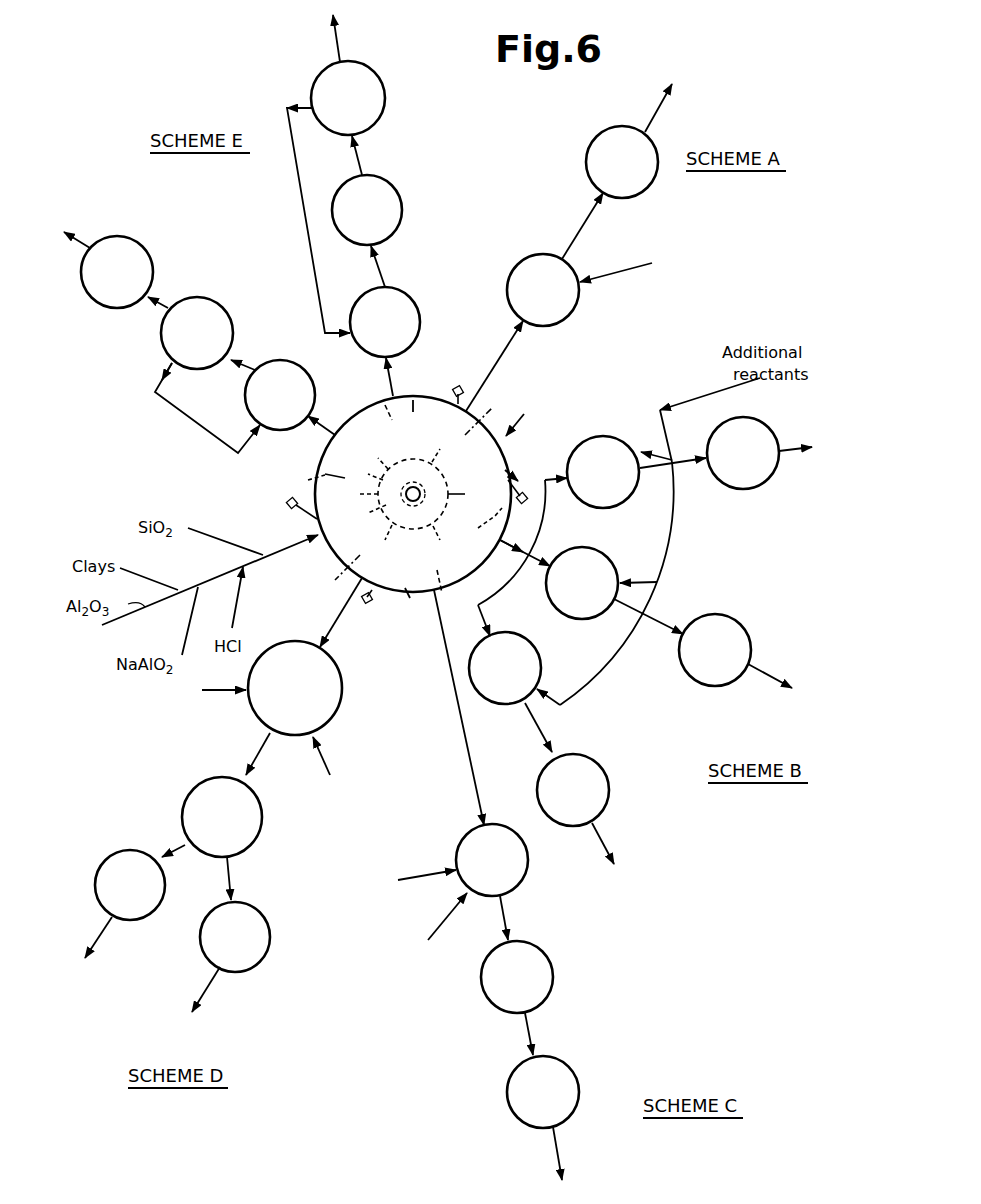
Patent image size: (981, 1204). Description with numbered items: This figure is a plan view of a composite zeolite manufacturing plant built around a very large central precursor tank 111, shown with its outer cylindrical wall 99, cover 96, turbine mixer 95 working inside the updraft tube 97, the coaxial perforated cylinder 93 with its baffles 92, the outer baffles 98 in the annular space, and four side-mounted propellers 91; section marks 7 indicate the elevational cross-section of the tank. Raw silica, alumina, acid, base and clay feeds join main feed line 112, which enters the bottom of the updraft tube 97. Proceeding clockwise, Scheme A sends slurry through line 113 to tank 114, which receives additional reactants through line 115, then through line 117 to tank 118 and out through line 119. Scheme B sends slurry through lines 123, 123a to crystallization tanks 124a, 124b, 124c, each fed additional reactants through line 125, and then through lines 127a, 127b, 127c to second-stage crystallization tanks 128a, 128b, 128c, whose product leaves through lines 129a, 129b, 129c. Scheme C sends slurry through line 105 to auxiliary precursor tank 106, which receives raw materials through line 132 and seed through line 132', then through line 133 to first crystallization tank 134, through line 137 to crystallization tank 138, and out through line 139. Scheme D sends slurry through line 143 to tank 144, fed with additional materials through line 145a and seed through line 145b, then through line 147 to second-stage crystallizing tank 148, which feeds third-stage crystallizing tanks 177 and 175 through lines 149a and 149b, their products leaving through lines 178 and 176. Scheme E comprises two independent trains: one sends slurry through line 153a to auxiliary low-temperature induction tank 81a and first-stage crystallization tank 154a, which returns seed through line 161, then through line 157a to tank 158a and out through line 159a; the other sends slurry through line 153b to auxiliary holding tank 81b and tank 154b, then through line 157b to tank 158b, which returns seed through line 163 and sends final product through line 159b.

The section line 7- 7 is at (492, 386).
The auxiliary low-temperature induction tank 81a is at (295, 365).
The auxiliary holding tank 81b is at (412, 302).
The side-mounted propellers 91 is at (288, 503).
The baffles 92 is at (411, 485).
The perforated cylinder 93 is at (364, 472).
The turbine mixer 95 is at (419, 489).
The cover 96 is at (430, 450).
The updraft tube 97 is at (365, 513).
The baffles 98 is at (478, 525).
The outer cylindrical wall 99 is at (314, 477).
The line 105 is at (468, 797).
The auxiliary precursor tank 106 is at (524, 876).
The precursor tank 111 is at (524, 414).
The feed line 112 is at (298, 545).
The line 113 is at (500, 348).
The tank 114 is at (570, 311).
The line 115 is at (625, 272).
The line 117 is at (582, 218).
The tank 118 is at (587, 152).
The line 119 is at (646, 111).
The line 123 is at (505, 548).
The line 123a is at (492, 602).
The crystallization tank 124a is at (590, 437).
The crystallization tank 124b is at (600, 548).
The crystallization tank 124c is at (540, 649).
The line 125 is at (692, 399).
The line 127a is at (688, 466).
The line 127b is at (664, 614).
The line 127c is at (537, 725).
The second-stage crystallization tank 128a is at (746, 489).
The second-stage crystallization tank 128b is at (720, 616).
The second-stage crystallization tank 128c is at (605, 782).
The line 129a is at (790, 447).
The line 129b is at (762, 676).
The line 129c is at (605, 838).
The line 132 is at (420, 861).
The line 132' is at (432, 916).
The line 133 is at (505, 906).
The first crystallization tank 134 is at (552, 972).
The line 137 is at (534, 1030).
The crystallization tank 138 is at (578, 1082).
The line 139 is at (558, 1140).
The line 143 is at (330, 628).
The tank 144 is at (343, 707).
The line 145a is at (218, 696).
The line 145b is at (326, 758).
The line 147 is at (258, 758).
The second-stage crystallizing tank 148 is at (190, 795).
The line 149a is at (176, 845).
The line 149b is at (229, 868).
The line 153a is at (328, 420).
The line 153b is at (393, 382).
The first-stage crystallization tank 154a is at (225, 310).
The tank 154b is at (402, 207).
The line 157a is at (160, 302).
The line 157b is at (360, 160).
The tank 158a is at (133, 242).
The tank 158b is at (385, 98).
The line 159a is at (88, 242).
The line 159b is at (336, 36).
The line 161 is at (195, 433).
The line 163 is at (313, 243).
The third-stage crystallizing tank 175 is at (265, 924).
The line 176 is at (202, 985).
The third-stage crystallizing tank 177 is at (112, 862).
The line 178 is at (97, 940).